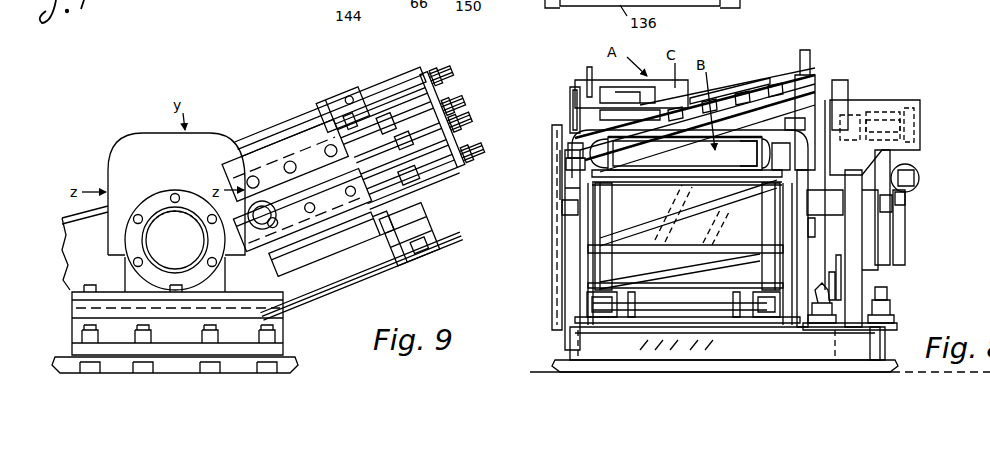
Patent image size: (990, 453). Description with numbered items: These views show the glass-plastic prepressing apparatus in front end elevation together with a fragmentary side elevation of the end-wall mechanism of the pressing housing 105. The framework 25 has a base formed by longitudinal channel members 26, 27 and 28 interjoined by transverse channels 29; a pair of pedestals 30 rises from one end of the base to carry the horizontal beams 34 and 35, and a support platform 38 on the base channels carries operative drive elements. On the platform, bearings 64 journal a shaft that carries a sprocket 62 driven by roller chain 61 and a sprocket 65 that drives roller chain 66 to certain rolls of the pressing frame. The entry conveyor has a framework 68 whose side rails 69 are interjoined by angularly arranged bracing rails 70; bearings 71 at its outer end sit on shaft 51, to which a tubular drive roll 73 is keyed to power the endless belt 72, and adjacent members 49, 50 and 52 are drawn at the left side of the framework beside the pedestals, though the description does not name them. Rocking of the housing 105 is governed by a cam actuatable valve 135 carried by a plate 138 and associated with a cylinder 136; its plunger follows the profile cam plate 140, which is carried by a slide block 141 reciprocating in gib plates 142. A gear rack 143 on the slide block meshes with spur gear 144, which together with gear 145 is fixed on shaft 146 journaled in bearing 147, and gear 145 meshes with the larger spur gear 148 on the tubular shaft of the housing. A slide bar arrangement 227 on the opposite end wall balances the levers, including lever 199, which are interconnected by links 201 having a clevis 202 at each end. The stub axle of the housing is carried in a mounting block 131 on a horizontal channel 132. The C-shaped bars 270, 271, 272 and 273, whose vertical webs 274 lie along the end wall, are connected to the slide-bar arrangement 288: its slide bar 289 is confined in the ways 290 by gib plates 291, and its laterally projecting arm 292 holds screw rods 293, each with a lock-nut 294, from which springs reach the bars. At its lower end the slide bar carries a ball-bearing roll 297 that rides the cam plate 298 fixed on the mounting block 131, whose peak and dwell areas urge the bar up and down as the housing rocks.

In FIG. 9, the cam plate 298 is at (150, 158).
In FIG. 9, the mounting block 131 is at (167, 248).
In FIG. 9, the channel 132 is at (120, 367).
In FIG. 9, the housing 105 is at (310, 123).
In FIG. 9, the ways 290 is at (268, 172).
In FIG. 9, the gib plates 291 is at (270, 170).
In FIG. 9, the ball-bearing roll 297 is at (262, 212).
In FIG. 9, the slide-bar arrangement 288 is at (352, 127).
In FIG. 8, the slide-bar arrangement 288 is at (573, 78).
In FIG. 9, the slide bar 289 is at (390, 147).
In FIG. 9, the C-shaped bar 273 is at (433, 178).
In FIG. 9, the C-shaped bar 272 is at (420, 193).
In FIG. 9, the C-shaped bar 271 is at (417, 207).
In FIG. 9, the C-shaped bar 270 is at (423, 220).
In FIG. 9, the vertically disposed web 274 is at (363, 158).
In FIG. 9, the link 201 is at (358, 277).
In FIG. 9, the lever 199 is at (430, 252).
In FIG. 9, the clevis 202 is at (412, 263).
In FIG. 9, the laterally projecting arm 292 is at (440, 107).
In FIG. 9, the screw rods 293 is at (450, 74).
In FIG. 9, the lock-nut 294 is at (432, 73).
In FIG. 8, the side plate 50 is at (553, 133).
In FIG. 8, the pedestals 30 is at (575, 238).
In FIG. 8, the beam 34 is at (563, 207).
In FIG. 8, the plate 49 is at (557, 190).
In FIG. 8, the shaft 51 is at (567, 163).
In FIG. 8, the bracket 52 is at (567, 153).
In FIG. 8, the endless belt 72 is at (733, 153).
In FIG. 8, the framework of the conveyor 68 is at (657, 173).
In FIG. 8, the bracing rails 70 is at (710, 203).
In FIG. 8, the bearings 71 is at (763, 163).
In FIG. 8, the tubular drive roll 73 is at (795, 136).
In FIG. 8, the side rails 69 is at (609, 203).
In FIG. 8, the framework 25 is at (598, 337).
In FIG. 8, the channel member 26 is at (572, 353).
In FIG. 8, the channel member 27 is at (787, 340).
In FIG. 8, the transverse channels 29 is at (829, 344).
In FIG. 8, the channel member 28 is at (877, 346).
In FIG. 8, the beam 35 is at (800, 198).
In FIG. 8, the slide bar arrangement 227 is at (813, 82).
In FIG. 8, the spur gear 148 is at (843, 78).
In FIG. 8, the spur gear 144 is at (907, 127).
In FIG. 8, the gear 145 is at (850, 110).
In FIG. 8, the shaft 146 is at (890, 108).
In FIG. 8, the bearing 147 is at (875, 108).
In FIG. 8, the gear rack 143 is at (917, 142).
In FIG. 8, the cylinder 136 is at (918, 164).
In FIG. 8, the slide block 141 is at (912, 182).
In FIG. 8, the gib plates 142 is at (905, 198).
In FIG. 8, the profile cam plate 140 is at (890, 207).
In FIG. 8, the plate 138 is at (883, 232).
In FIG. 8, the cam actuatable valve 135 is at (892, 245).
In FIG. 8, the roller chain 66 is at (875, 277).
In FIG. 8, the sprocket 65 is at (888, 294).
In FIG. 8, the bearings 64 is at (820, 290).
In FIG. 8, the roller chain 61 is at (838, 258).
In FIG. 8, the sprocket 62 is at (831, 273).
In FIG. 8, the support platform 38 is at (890, 323).